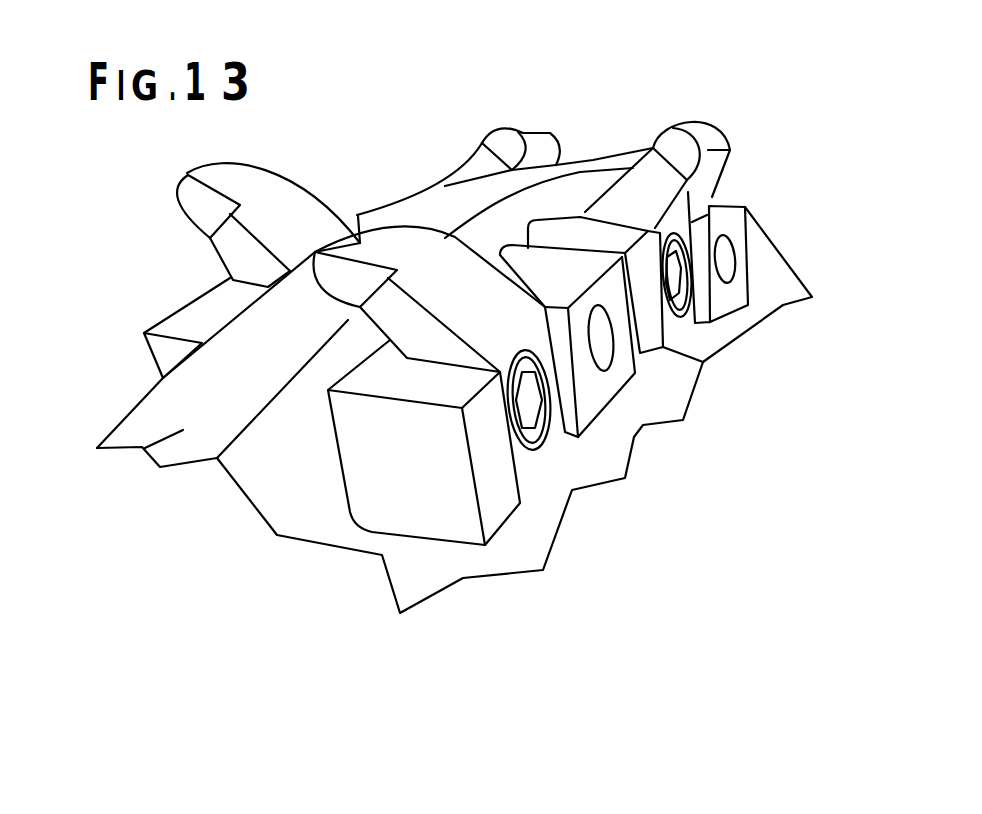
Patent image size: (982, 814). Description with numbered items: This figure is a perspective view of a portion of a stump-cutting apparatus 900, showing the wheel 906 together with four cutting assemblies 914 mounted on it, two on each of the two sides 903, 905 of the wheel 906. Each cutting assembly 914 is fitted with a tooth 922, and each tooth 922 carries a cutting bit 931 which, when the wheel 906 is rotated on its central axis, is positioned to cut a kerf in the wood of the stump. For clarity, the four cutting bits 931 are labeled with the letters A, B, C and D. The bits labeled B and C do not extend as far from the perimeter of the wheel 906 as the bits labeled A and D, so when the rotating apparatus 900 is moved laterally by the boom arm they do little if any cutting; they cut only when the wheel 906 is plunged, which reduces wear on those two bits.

The apparatus 900 is at (346, 81).
The side of the wheel 903 is at (135, 402).
The side of the wheel 905 is at (307, 485).
The wheel 906 is at (157, 448).
The cutting assembly 914 is at (187, 305).
The tooth 922 is at (223, 248).
The cutting bit 931 is at (187, 175).